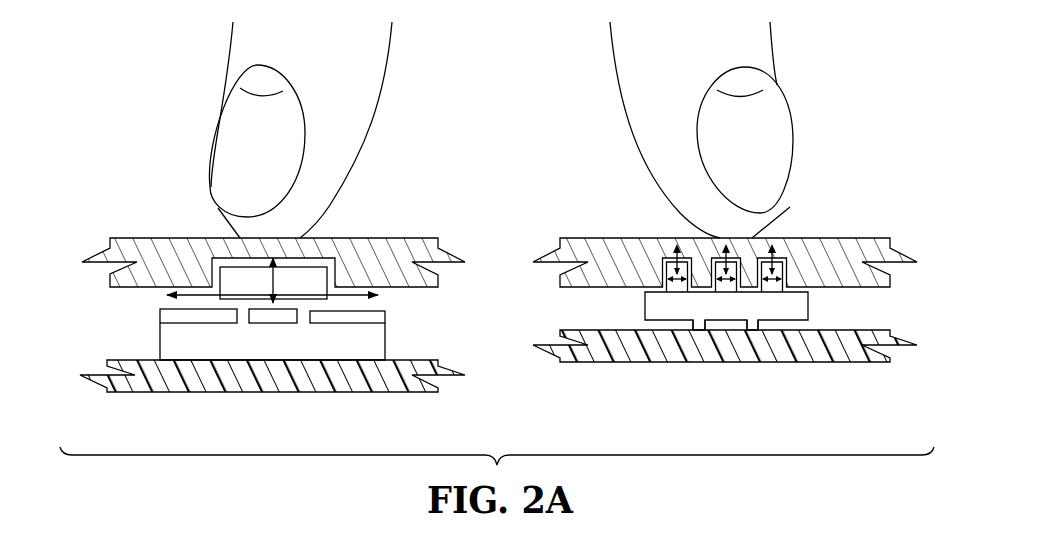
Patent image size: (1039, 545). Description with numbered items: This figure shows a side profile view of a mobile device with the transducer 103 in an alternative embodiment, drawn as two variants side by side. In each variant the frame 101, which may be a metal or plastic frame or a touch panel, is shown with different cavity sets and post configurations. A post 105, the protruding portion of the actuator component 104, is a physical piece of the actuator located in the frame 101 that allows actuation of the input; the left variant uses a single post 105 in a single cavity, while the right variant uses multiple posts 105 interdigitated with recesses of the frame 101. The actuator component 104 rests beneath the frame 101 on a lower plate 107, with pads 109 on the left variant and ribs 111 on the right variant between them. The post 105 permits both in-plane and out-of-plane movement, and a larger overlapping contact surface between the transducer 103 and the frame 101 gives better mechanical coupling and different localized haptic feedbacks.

The frame 101 is at (185, 238).
The transducer 103 is at (95, 342).
The actuator component 104 is at (165, 340).
The post 105 is at (338, 278).
The bottom plate / support 107 is at (278, 392).
The contact pads 109 is at (177, 311).
The support ribs 111 is at (688, 323).